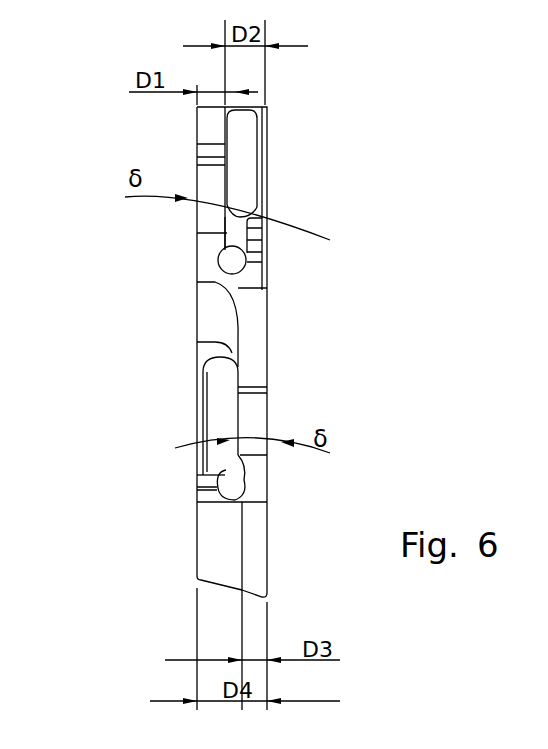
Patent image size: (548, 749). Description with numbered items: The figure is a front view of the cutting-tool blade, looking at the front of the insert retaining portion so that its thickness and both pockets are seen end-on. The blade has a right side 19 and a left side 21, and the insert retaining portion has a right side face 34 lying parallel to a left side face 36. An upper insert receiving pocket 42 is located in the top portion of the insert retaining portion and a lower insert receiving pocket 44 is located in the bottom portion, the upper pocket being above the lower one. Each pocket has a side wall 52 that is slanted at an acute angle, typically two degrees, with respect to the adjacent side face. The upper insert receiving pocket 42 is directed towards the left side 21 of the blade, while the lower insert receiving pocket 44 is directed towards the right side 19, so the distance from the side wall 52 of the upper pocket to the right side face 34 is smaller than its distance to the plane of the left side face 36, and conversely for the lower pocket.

The right side 19 is at (127, 292).
The left side 21 is at (350, 300).
The right side face 34 is at (172, 378).
The left side face 36 is at (308, 393).
The upper insert receiving pocket 42 is at (246, 170).
The lower insert receiving pocket 44 is at (200, 472).
The side wall 52 is at (227, 152).